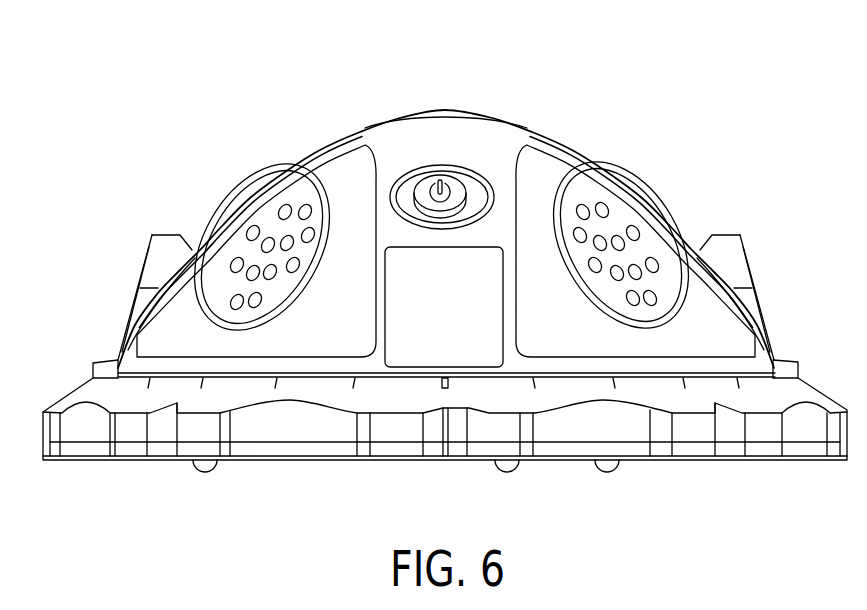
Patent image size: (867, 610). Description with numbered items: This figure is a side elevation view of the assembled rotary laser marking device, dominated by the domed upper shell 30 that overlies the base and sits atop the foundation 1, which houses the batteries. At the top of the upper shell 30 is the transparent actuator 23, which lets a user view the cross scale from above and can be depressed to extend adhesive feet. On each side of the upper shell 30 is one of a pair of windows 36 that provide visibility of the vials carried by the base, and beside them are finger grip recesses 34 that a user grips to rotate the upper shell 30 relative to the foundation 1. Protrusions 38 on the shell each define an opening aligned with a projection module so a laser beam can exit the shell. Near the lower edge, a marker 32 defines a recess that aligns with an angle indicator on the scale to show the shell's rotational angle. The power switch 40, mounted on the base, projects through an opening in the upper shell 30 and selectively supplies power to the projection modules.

The foundation 1 is at (52, 461).
The transparent actuator 23 is at (447, 112).
The upper shell 30 is at (587, 104).
The markers 32 is at (785, 360).
The finger grip recesses 34 is at (262, 212).
The windows 36 is at (297, 148).
The protrusions 38 is at (168, 235).
The power switch 40 is at (430, 181).